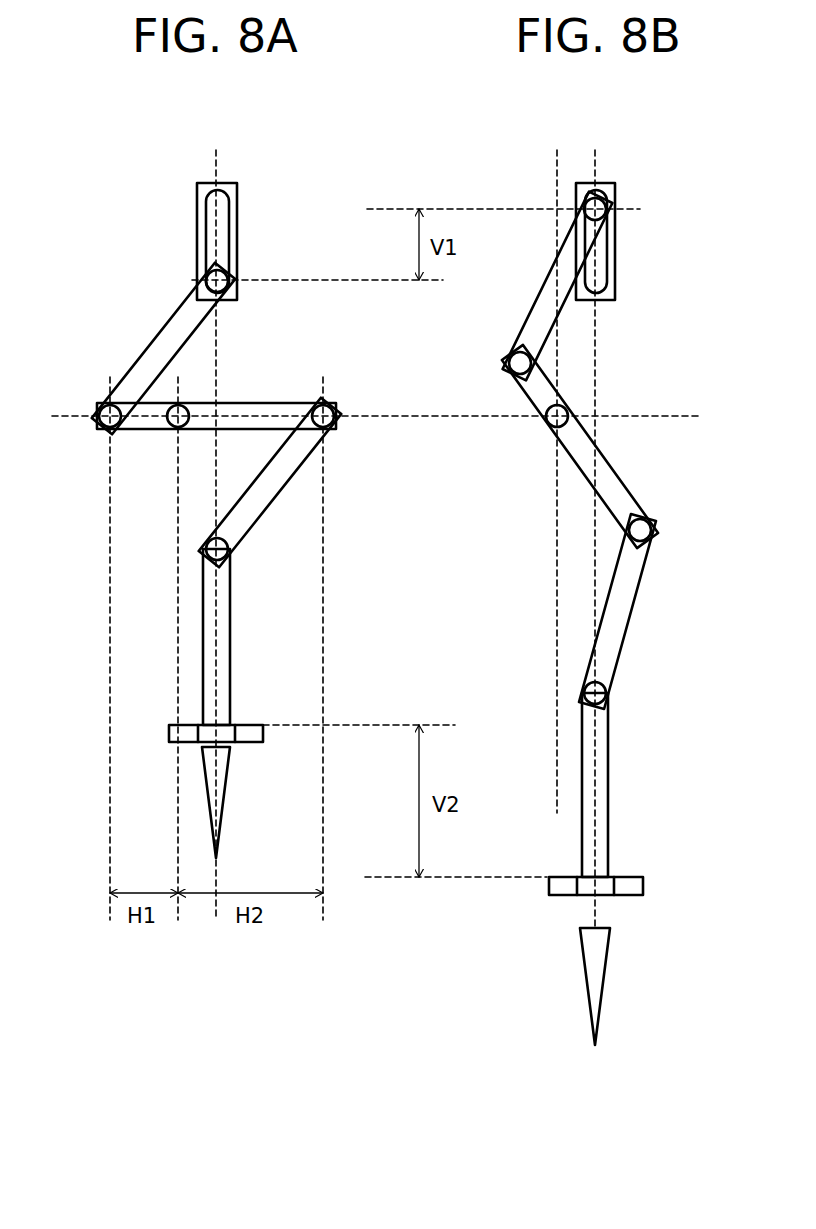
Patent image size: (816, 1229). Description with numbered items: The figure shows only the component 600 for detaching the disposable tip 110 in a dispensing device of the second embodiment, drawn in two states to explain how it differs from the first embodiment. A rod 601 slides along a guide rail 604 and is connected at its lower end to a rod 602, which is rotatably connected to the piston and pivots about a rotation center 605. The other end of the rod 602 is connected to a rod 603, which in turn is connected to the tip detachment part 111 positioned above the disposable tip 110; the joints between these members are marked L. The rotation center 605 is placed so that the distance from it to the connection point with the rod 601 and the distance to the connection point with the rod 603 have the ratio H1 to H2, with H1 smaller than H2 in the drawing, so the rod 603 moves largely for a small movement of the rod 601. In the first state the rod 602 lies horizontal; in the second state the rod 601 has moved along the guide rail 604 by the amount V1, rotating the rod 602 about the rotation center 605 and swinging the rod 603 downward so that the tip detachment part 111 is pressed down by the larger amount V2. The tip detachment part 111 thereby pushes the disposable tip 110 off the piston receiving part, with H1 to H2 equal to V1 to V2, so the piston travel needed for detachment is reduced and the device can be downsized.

In FIG. 8A, the component for detaching the disposable tip 600 is at (167, 208).
In FIG. 8B, the component for detaching the disposable tip 600 is at (655, 200).
In FIG. 8A, the rod 601 is at (160, 338).
In FIG. 8B, the rod 601 is at (558, 286).
In FIG. 8A, the rod 602 is at (147, 422).
In FIG. 8B, the rod 602 is at (620, 490).
In FIG. 8A, the rod 603 is at (272, 485).
In FIG. 8B, the rod 603 is at (623, 622).
In FIG. 8A, the guide rail 604 is at (237, 190).
In FIG. 8A, the rotation center 605 is at (183, 403).
In FIG. 8B, the rotation center 605 is at (545, 425).
In FIG. 8A, the joint L is at (226, 290).
In FIG. 8B, the joint L is at (608, 220).
In FIG. 8A, the tip detachment part 111 is at (232, 638).
In FIG. 8B, the tip detachment part 111 is at (610, 805).
In FIG. 8A, the disposable tip 110 is at (225, 805).
In FIG. 8B, the disposable tip 110 is at (605, 975).